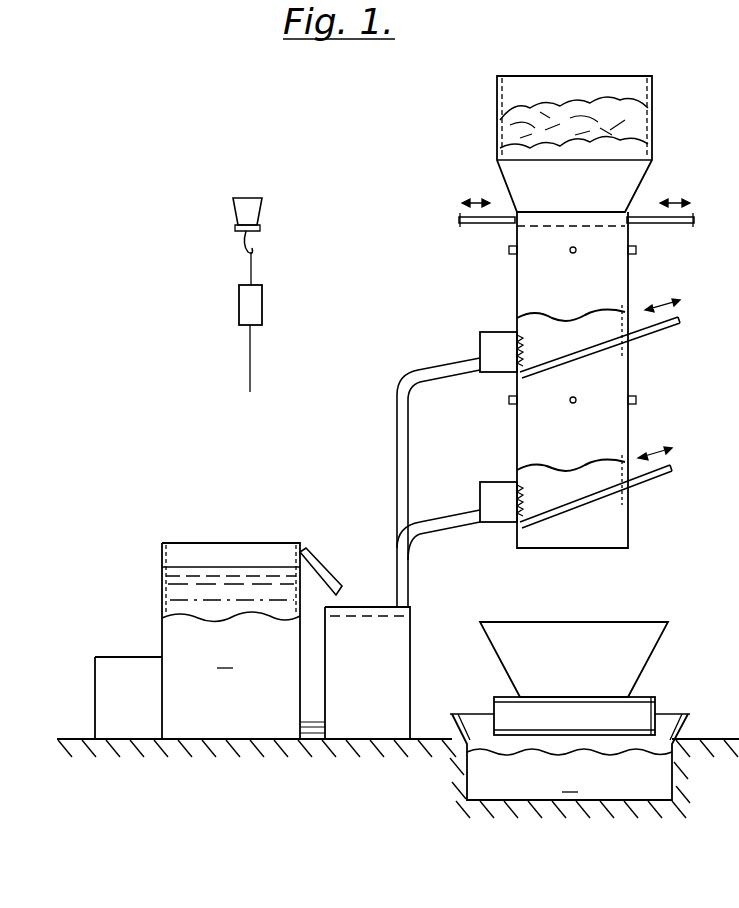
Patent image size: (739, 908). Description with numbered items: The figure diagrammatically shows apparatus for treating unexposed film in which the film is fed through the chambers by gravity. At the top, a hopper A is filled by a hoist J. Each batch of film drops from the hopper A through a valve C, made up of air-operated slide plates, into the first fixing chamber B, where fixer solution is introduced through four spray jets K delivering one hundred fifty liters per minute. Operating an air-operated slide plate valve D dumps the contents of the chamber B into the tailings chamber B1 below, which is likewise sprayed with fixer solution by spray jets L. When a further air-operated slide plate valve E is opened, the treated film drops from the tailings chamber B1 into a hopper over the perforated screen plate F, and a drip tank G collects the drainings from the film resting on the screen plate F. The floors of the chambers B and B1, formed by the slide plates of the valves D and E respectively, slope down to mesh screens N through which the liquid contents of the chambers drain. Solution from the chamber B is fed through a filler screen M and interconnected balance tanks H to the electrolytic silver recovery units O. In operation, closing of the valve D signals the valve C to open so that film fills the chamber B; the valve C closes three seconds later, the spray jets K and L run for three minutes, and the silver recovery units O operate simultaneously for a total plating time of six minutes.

The hopper A is at (576, 90).
The first fixing chamber B is at (538, 268).
The tailings chamber B1 is at (538, 425).
The valve C is at (487, 223).
The spray jets K is at (510, 252).
The spray jets L is at (510, 402).
The mesh screens N is at (522, 345).
The air-operated slide plate valve D is at (665, 330).
The air-operated slide plate valve E is at (652, 478).
The filler screen M is at (378, 605).
The balance tanks H is at (390, 678).
The electrolytic silver recovery units O is at (218, 641).
The perforated screen plate F is at (562, 697).
The drip tank G is at (570, 748).
The hoist J is at (262, 224).